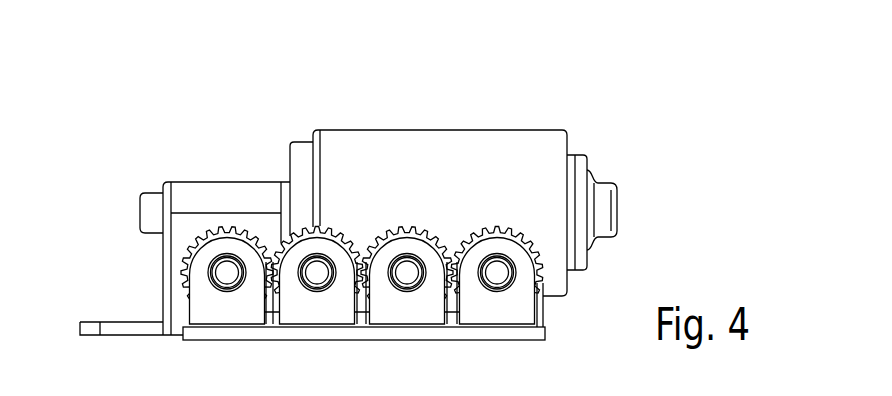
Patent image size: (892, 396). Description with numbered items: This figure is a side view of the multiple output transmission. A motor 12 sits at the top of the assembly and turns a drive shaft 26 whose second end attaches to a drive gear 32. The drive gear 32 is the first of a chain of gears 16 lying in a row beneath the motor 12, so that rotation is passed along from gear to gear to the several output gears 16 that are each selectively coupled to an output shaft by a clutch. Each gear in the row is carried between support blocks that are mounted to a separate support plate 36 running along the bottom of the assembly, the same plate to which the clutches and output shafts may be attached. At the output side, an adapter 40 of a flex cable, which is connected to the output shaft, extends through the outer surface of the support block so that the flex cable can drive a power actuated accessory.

The motor 12 is at (530, 163).
The chain of gears 16 is at (527, 237).
The drive shaft 26 is at (222, 276).
The drive gear 32 is at (188, 252).
The support plate 36 is at (533, 336).
The adapter 40 is at (507, 276).